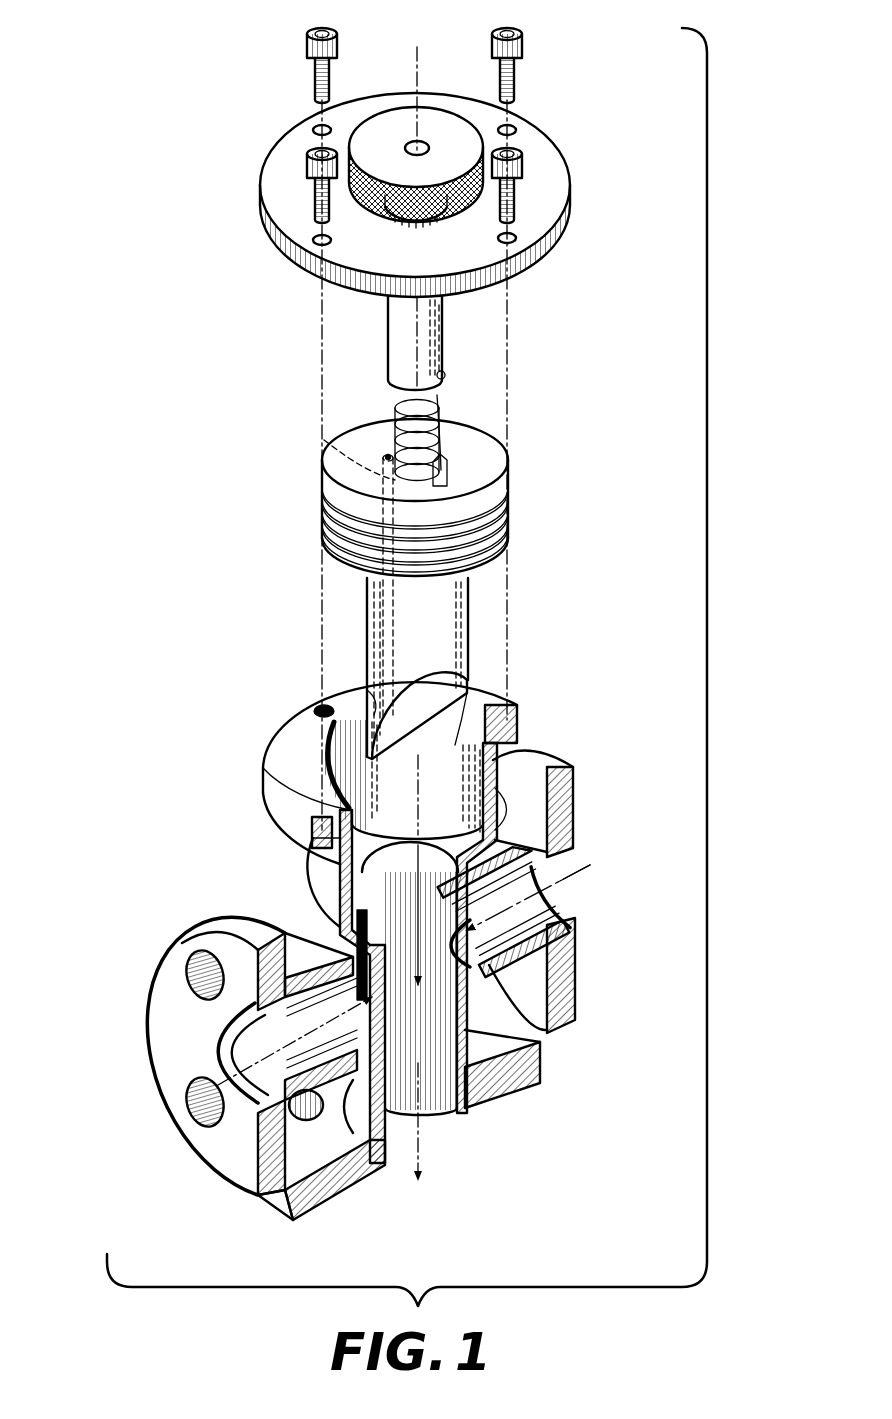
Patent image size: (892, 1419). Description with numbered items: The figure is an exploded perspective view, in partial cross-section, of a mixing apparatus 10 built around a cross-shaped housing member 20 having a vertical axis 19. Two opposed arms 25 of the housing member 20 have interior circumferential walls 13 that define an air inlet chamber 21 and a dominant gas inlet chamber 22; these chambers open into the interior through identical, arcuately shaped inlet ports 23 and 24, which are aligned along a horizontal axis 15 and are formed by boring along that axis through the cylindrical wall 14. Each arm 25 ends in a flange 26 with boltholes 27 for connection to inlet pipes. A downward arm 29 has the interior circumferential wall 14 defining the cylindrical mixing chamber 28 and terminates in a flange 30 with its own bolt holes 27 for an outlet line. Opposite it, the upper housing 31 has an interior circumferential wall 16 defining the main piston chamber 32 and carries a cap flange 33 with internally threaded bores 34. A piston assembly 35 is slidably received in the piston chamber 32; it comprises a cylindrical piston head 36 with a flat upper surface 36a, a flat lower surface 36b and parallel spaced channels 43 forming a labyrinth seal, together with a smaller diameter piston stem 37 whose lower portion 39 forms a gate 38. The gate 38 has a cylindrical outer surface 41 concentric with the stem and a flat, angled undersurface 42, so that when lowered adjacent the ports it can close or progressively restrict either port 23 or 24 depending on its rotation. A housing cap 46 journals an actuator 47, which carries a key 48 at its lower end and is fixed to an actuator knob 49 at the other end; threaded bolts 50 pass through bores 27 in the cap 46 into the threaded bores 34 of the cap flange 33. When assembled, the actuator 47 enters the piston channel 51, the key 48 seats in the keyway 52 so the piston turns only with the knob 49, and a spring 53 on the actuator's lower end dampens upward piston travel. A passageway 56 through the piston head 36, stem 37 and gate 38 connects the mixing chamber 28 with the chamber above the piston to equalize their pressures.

The mixing apparatus 10 is at (724, 543).
The interior circumferential walls 13 is at (505, 935).
The interior circumferential wall 14 is at (425, 1095).
The horizontal axis 15 is at (577, 873).
The interior circumferential wall 16 is at (460, 793).
The vertical axis 19 is at (417, 85).
The housing member 20 is at (400, 952).
The air inlet chamber 21 is at (537, 917).
The dominant gas inlet chamber 22 is at (240, 1043).
The inlet port 23 is at (473, 968).
The inlet port 24 is at (352, 960).
The arms 25 is at (298, 945).
The flange 26 is at (572, 770).
The boltholes 27 is at (318, 128).
The mixing chamber 28 is at (428, 1077).
The arm 29 is at (358, 1118).
The flange 30 is at (337, 1190).
The upper housing 31 is at (320, 880).
The piston chamber 32 is at (332, 757).
The cap flange 33 is at (272, 790).
The internally threaded bores 34 is at (318, 708).
The piston assembly 35 is at (422, 504).
The piston head 36 is at (422, 504).
The upper surface 36a is at (497, 478).
The lower surface 36b is at (480, 573).
The piston stem 37 is at (372, 608).
The gate 38 is at (367, 712).
The lower portion 39 is at (468, 677).
The outer surface 41 is at (370, 697).
The undersurface 42 is at (455, 703).
The channels 43 is at (368, 545).
The housing cap 46 is at (278, 172).
The actuator 47 is at (398, 355).
The key 48 is at (441, 372).
The actuator knob 49 is at (388, 165).
The threaded bolts 50 is at (308, 40).
The piston channel 51 is at (441, 468).
The keyway 52 is at (443, 483).
The spring 53 is at (397, 405).
The passageway 56 is at (386, 456).